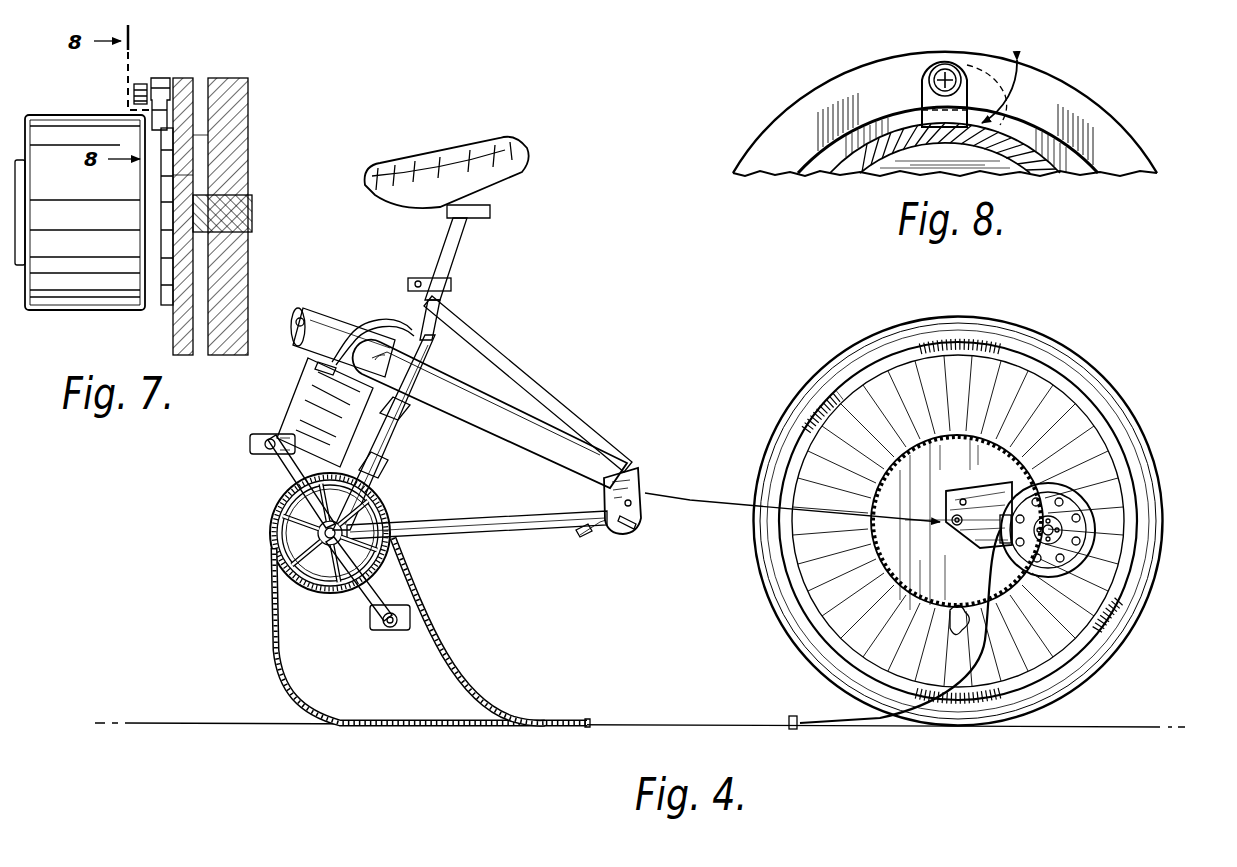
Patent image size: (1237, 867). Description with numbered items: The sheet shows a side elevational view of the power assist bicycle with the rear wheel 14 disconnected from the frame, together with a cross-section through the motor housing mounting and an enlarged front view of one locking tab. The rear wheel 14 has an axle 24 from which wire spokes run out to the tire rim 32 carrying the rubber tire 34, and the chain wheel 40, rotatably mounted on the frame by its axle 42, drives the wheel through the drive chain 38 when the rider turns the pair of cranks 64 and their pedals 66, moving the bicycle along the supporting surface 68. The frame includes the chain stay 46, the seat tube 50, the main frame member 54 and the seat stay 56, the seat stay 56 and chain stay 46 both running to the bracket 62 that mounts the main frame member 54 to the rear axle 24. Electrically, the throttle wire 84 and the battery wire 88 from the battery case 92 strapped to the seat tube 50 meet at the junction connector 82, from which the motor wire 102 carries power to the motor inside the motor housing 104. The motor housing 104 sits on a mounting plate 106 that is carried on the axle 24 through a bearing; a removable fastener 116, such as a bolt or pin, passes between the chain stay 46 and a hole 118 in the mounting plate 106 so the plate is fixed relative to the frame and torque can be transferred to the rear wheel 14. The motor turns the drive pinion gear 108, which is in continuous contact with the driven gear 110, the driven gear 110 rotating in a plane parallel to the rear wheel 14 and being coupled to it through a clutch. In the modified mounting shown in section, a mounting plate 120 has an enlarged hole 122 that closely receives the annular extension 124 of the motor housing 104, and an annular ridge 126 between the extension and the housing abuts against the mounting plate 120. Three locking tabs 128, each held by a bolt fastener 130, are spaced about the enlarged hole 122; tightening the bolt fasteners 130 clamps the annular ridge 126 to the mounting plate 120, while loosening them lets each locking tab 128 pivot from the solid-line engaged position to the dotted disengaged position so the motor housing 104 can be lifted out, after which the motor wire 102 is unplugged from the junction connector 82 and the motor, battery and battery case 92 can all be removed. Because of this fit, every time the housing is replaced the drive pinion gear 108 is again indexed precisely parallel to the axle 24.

In FIG. 4, the rear wheel 14 is at (1050, 332).
In FIG. 4, the axle 24 is at (795, 585).
In FIG. 4, the tire rim 32 is at (1130, 473).
In FIG. 4, the rubber tire 34 is at (1133, 625).
In FIG. 4, the drive chain 38 is at (438, 612).
In FIG. 4, the chain wheel 40 is at (338, 590).
In FIG. 4, the axle 42 is at (312, 542).
In FIG. 4, the chain stay 46 is at (462, 523).
In FIG. 4, the seat tube 50 is at (370, 488).
In FIG. 4, the main frame member 54 is at (487, 398).
In FIG. 4, the seat stay 56 is at (495, 345).
In FIG. 4, the bracket 62 is at (641, 498).
In FIG. 4, the cranks 64 is at (290, 478).
In FIG. 4, the pedal 66 is at (245, 450).
In FIG. 4, the supporting surface 68 is at (722, 726).
In FIG. 4, the junction connector 82 is at (440, 325).
In FIG. 4, the throttle wire 84 is at (392, 325).
In FIG. 4, the battery wire 88 is at (318, 367).
In FIG. 4, the battery case 92 is at (306, 408).
In FIG. 4, the motor wire 102 is at (835, 716).
In FIG. 7, the motor housing 104 is at (90, 312).
In FIG. 4, the motor housing 104 is at (1100, 518).
In FIG. 4, the mounting plate 106 is at (1075, 445).
In FIG. 7, the drive pinion gear 108 is at (252, 222).
In FIG. 7, the driven gear 110 is at (235, 292).
In FIG. 4, the driven gear 110 is at (850, 415).
In FIG. 4, the fastener 116 is at (582, 536).
In FIG. 4, the hole 118 is at (905, 470).
In FIG. 7, the mounting plate 120 is at (184, 355).
In FIG. 8, the mounting plate 120 is at (1112, 113).
In FIG. 7, the enlarged hole 122 is at (194, 137).
In FIG. 7, the annular extension 124 is at (180, 178).
In FIG. 8, the annular extension 124 is at (1070, 150).
In FIG. 7, the annular ridge 126 is at (165, 305).
In FIG. 8, the annular ridge 126 is at (882, 110).
In FIG. 7, the locking tabs 128 is at (168, 78).
In FIG. 8, the locking tabs 128 is at (975, 75).
In FIG. 7, the bolt fastener 130 is at (142, 82).
In FIG. 8, the bolt fastener 130 is at (932, 70).